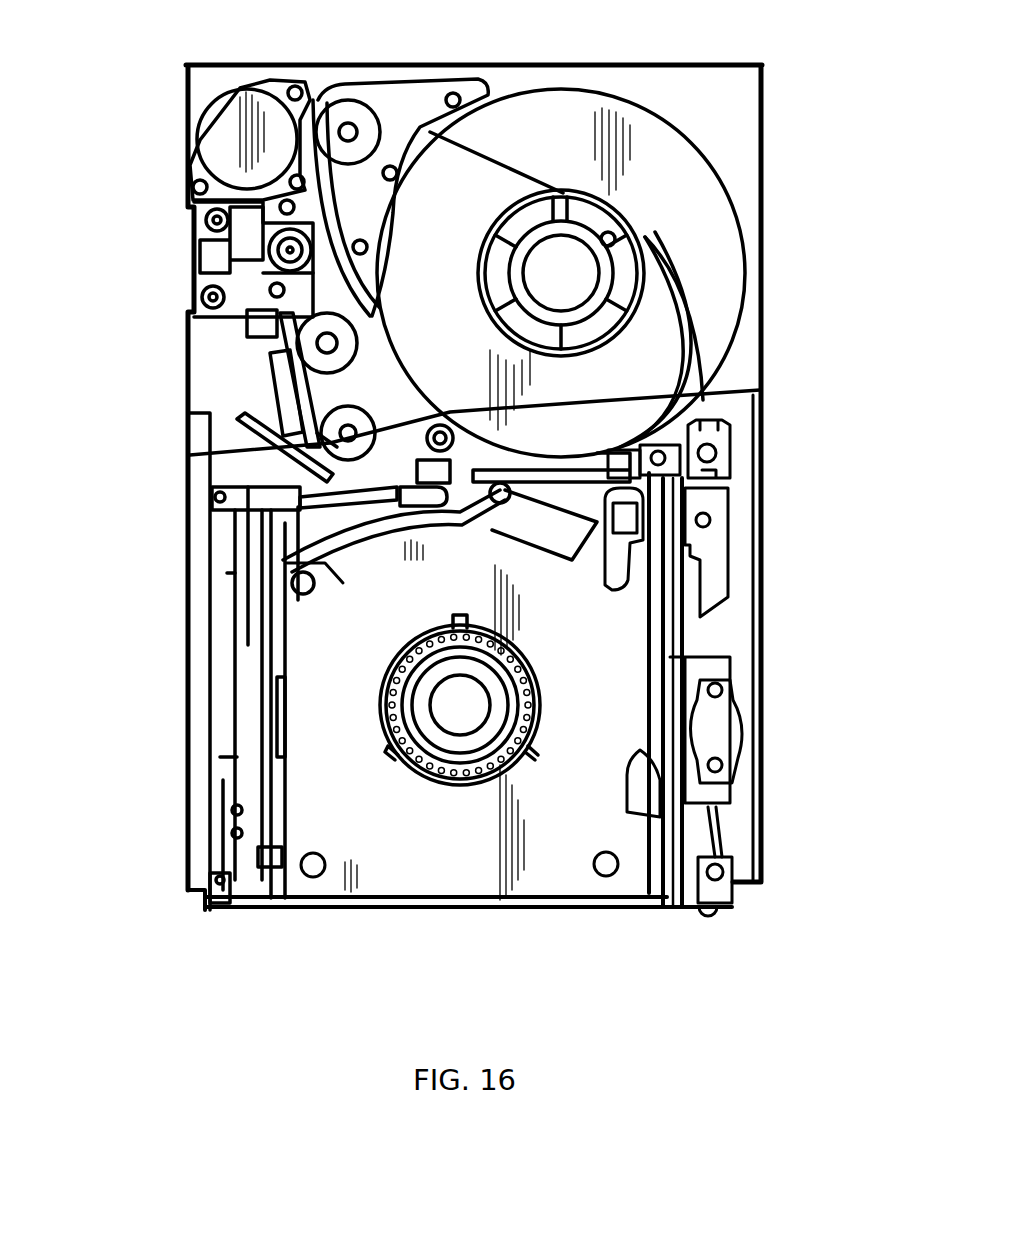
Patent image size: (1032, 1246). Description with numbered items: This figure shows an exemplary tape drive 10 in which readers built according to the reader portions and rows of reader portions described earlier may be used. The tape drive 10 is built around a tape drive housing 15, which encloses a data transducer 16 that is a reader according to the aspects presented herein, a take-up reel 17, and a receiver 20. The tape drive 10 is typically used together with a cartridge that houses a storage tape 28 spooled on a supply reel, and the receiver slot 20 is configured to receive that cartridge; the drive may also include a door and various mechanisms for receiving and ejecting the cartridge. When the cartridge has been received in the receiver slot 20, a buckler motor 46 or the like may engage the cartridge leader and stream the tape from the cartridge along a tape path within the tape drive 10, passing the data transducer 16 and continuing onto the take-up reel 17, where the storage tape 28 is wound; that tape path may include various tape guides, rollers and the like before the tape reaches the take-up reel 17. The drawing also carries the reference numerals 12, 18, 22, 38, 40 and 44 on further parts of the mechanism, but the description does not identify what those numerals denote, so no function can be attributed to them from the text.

The tape drive 10 is at (166, 922).
The chassis 12 is at (785, 430).
The tape drive housing 15 is at (763, 557).
The data transducer 16 is at (194, 264).
The take-up reel 17 is at (710, 217).
The slide member 18 is at (345, 508).
The receiver slot 20 is at (617, 887).
The tape 22 is at (742, 392).
The storage tape 28 is at (480, 168).
The guide bar 38 is at (330, 448).
The slider 40 is at (240, 770).
The lever 44 is at (400, 492).
The buckler motor 46 is at (337, 485).